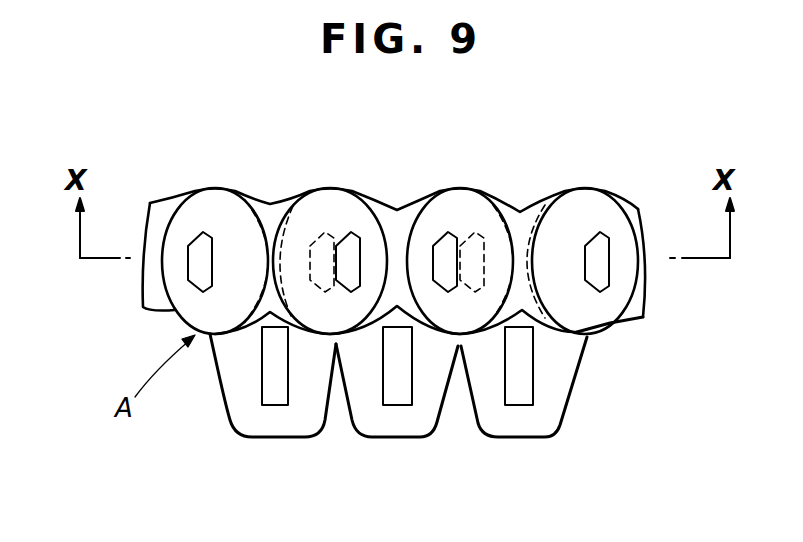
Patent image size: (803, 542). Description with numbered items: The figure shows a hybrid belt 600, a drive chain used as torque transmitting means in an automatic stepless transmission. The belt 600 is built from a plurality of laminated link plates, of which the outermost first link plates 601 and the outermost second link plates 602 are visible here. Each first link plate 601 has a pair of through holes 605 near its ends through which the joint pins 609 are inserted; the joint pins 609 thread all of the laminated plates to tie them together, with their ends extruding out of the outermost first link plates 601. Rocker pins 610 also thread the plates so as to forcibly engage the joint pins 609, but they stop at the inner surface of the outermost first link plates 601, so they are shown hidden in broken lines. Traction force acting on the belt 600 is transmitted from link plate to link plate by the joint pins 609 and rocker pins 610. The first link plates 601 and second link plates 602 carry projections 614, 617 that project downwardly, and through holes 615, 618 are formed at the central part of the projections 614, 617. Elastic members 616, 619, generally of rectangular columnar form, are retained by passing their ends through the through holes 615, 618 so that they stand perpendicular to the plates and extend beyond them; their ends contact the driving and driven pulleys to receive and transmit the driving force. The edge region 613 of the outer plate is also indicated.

The hybrid belt 600 is at (580, 148).
The first link plate 601 is at (593, 203).
The second link plate 602 is at (393, 212).
The through hole 605 is at (590, 272).
The joint pin 609 is at (447, 235).
The rocker pin 610 is at (472, 236).
The plate edge 613 is at (641, 318).
The projection 614 is at (550, 423).
The through hole 615 is at (520, 408).
The elastic member 616 is at (507, 385).
The projection 617 is at (377, 437).
The through hole 618 is at (394, 372).
The elastic member 619 is at (402, 398).